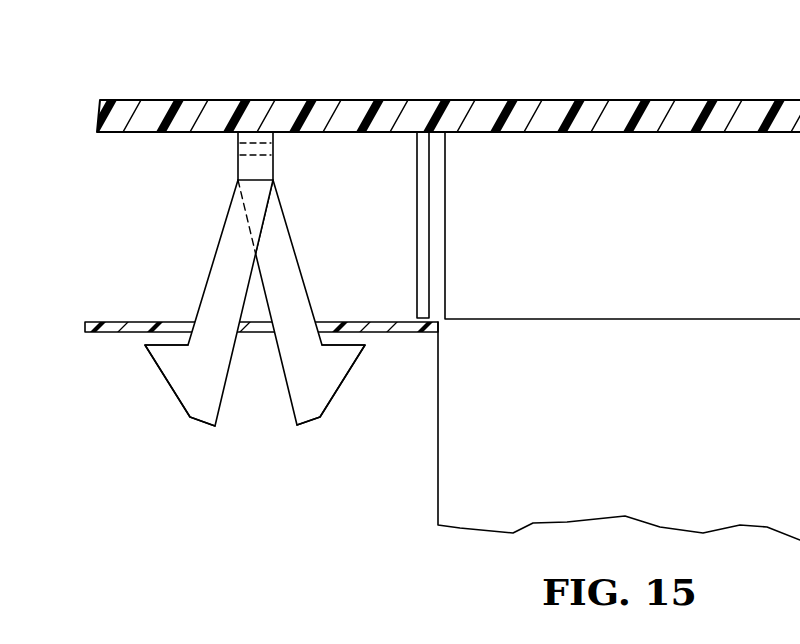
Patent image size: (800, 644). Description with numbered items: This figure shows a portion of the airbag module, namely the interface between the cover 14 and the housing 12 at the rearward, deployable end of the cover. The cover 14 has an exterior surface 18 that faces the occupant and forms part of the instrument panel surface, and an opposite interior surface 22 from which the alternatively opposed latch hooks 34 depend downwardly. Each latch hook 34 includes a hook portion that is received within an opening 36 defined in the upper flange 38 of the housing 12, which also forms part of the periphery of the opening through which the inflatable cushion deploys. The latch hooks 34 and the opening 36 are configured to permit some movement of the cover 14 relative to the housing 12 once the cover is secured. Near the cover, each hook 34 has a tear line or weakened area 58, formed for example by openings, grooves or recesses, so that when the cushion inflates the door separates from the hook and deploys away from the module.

The housing 12 is at (460, 528).
The cover 14 is at (628, 100).
The exterior surface 18 is at (272, 100).
The interior surface 22 is at (345, 132).
The latch hooks 34 is at (238, 304).
The opening 36 is at (187, 333).
The flange 38 is at (122, 332).
The tear line or weakened area 58 is at (237, 148).